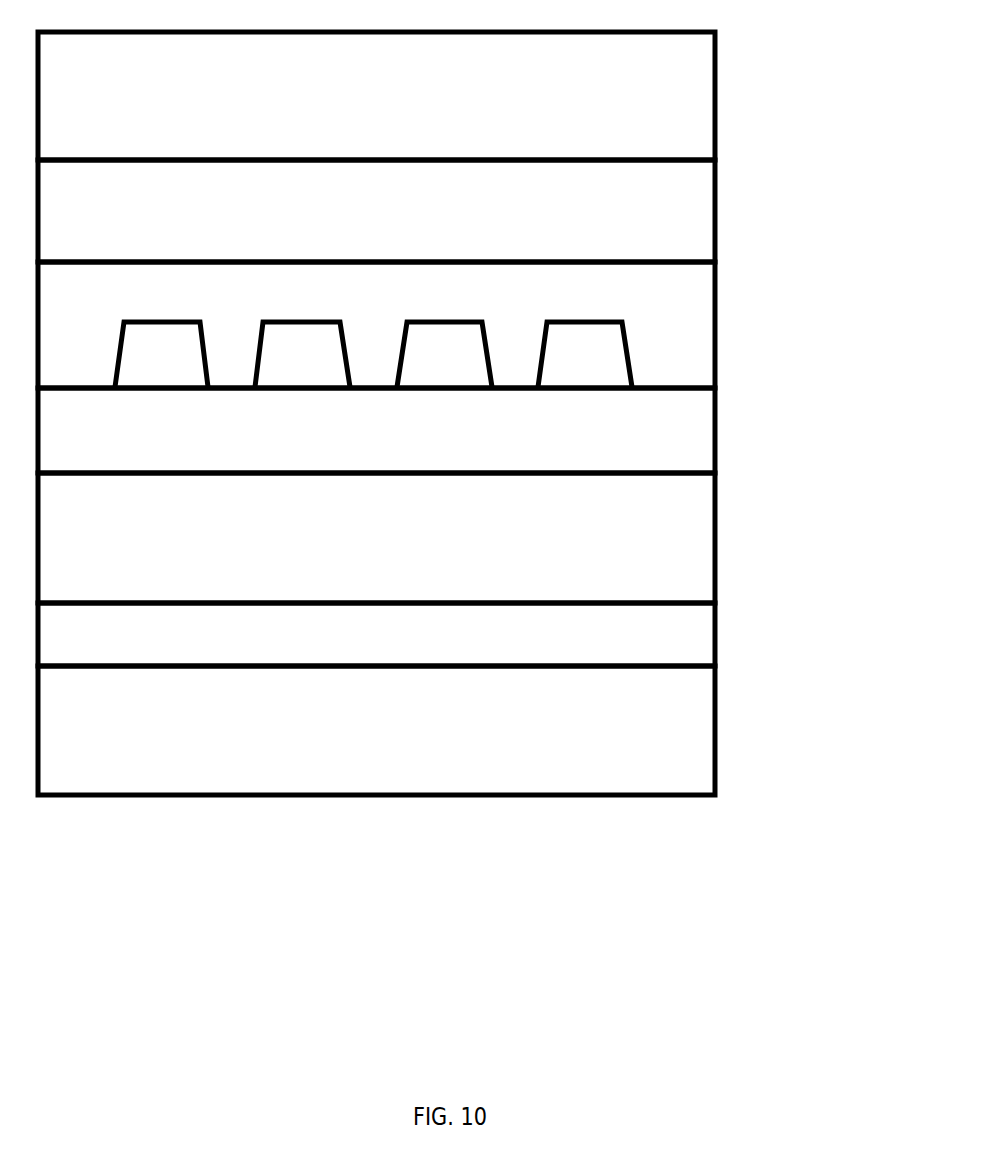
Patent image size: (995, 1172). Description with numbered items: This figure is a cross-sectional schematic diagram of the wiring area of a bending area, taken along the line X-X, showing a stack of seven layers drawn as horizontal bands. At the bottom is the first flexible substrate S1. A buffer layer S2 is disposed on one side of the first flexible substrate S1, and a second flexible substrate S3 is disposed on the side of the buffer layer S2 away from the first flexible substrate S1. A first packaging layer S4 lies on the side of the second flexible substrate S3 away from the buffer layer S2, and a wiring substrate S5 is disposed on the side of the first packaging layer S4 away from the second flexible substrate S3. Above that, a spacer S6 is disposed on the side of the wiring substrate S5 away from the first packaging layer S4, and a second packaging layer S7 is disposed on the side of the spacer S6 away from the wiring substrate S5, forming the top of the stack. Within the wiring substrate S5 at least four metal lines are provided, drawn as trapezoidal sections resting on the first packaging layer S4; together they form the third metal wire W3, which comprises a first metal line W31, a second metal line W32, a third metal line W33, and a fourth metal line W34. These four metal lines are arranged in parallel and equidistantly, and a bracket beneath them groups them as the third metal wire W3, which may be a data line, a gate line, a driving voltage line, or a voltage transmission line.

The first flexible substrate S1 is at (685, 728).
The buffer layer S2 is at (687, 634).
The second flexible substrate S3 is at (687, 562).
The first packaging layer S4 is at (687, 433).
The wiring substrate S5 is at (687, 333).
The spacer S6 is at (675, 205).
The second packaging layer S7 is at (675, 117).
The third metal wire W3 is at (381, 694).
The first metal line W31 is at (157, 391).
The second metal line W32 is at (315, 391).
The third metal line W33 is at (447, 391).
The fourth metal line W34 is at (579, 391).